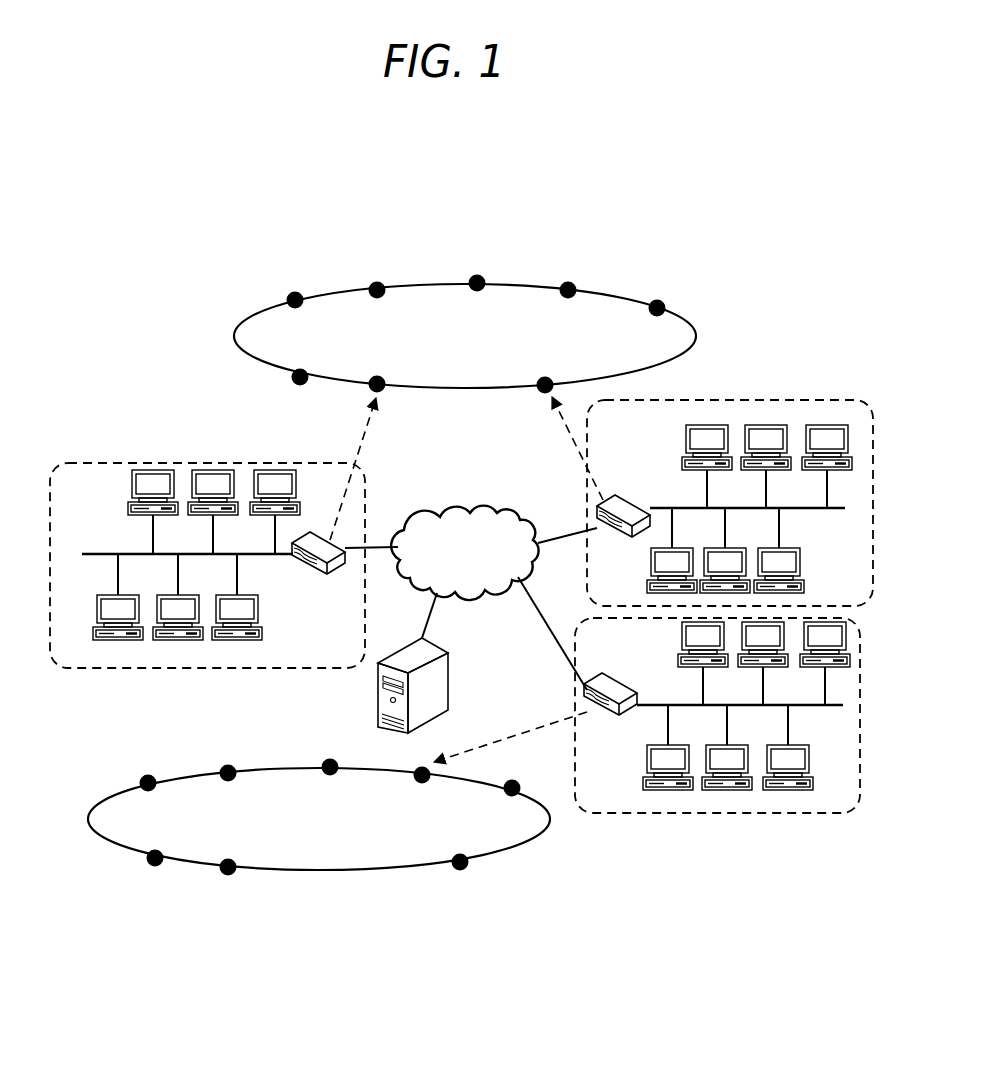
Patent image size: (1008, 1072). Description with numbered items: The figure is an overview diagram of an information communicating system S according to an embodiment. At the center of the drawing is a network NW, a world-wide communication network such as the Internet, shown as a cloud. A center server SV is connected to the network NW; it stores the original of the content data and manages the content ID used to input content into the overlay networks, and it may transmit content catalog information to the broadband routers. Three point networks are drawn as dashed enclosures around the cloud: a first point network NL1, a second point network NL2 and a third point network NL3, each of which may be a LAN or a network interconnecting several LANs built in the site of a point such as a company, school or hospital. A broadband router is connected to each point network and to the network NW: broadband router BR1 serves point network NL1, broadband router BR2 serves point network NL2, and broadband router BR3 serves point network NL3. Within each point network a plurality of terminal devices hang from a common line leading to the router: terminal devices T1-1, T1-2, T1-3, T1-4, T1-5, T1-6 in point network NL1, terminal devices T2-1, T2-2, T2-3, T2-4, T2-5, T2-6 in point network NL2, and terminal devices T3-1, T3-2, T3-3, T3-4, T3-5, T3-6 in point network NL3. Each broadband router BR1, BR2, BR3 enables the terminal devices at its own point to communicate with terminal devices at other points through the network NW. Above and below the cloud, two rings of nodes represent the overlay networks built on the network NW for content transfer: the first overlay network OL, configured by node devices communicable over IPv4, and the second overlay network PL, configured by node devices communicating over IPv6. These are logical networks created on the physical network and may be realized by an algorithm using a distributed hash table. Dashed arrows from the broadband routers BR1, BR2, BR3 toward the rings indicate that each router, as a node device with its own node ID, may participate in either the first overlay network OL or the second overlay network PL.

The information communicating system S is at (112, 332).
The first overlay network OL is at (612, 290).
The second overlay network PL is at (545, 840).
The network NW is at (427, 512).
The center server SV is at (448, 667).
The broadband router BR1 is at (618, 497).
The broadband router BR2 is at (607, 677).
The broadband router BR3 is at (310, 532).
The point network NL1 is at (836, 516).
The point network NL2 is at (824, 714).
The point network NL3 is at (273, 564).
The terminal device T1-1 is at (683, 466).
The terminal device T1-2 is at (765, 423).
The terminal device T1-3 is at (822, 468).
The terminal device T1-4 is at (675, 547).
The terminal device T1-5 is at (745, 536).
The terminal device T1-6 is at (786, 547).
The terminal device T2-1 is at (684, 668).
The terminal device T2-2 is at (751, 668).
The terminal device T2-3 is at (812, 668).
The terminal device T2-4 is at (647, 766).
The terminal device T2-5 is at (745, 731).
The terminal device T2-6 is at (805, 731).
The terminal device T3-1 is at (136, 514).
The terminal device T3-2 is at (197, 514).
The terminal device T3-3 is at (259, 514).
The terminal device T3-4 is at (98, 612).
The terminal device T3-5 is at (198, 581).
The terminal device T3-6 is at (252, 581).